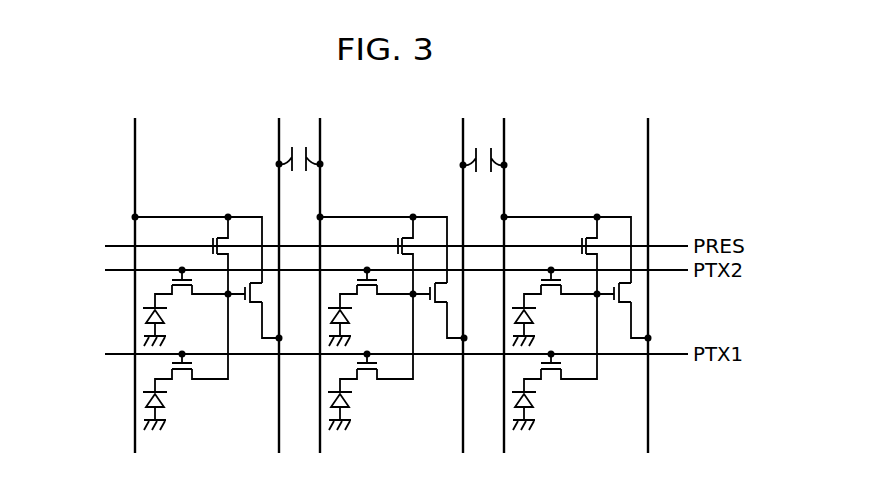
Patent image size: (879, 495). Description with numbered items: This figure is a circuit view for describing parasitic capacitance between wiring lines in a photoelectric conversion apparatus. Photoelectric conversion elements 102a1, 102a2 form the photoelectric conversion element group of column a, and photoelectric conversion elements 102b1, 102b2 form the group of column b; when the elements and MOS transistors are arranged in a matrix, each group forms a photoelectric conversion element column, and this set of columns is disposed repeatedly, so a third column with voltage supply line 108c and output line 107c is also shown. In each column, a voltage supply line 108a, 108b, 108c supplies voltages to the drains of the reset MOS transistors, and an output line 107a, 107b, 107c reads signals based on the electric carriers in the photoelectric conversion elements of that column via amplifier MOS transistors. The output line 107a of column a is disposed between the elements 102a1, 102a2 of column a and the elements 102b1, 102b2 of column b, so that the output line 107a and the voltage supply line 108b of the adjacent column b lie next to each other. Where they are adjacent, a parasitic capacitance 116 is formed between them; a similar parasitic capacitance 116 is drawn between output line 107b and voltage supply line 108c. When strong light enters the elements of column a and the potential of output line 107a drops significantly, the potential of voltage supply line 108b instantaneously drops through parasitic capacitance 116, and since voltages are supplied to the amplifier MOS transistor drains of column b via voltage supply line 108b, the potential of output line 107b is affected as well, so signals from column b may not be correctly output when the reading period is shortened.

The voltage supply line 108a is at (135, 121).
The output line 107a is at (279, 121).
The voltage supply line 108b is at (320, 121).
The output line 107b is at (463, 121).
The voltage supply line 108c is at (504, 121).
The output line 107c is at (648, 121).
The parasitic capacitance 116 is at (308, 158).
The photoelectric conversion element 102a1 is at (163, 318).
The photoelectric conversion element 102a2 is at (163, 401).
The photoelectric conversion element 102b1 is at (347, 318).
The photoelectric conversion element 102b2 is at (347, 400).